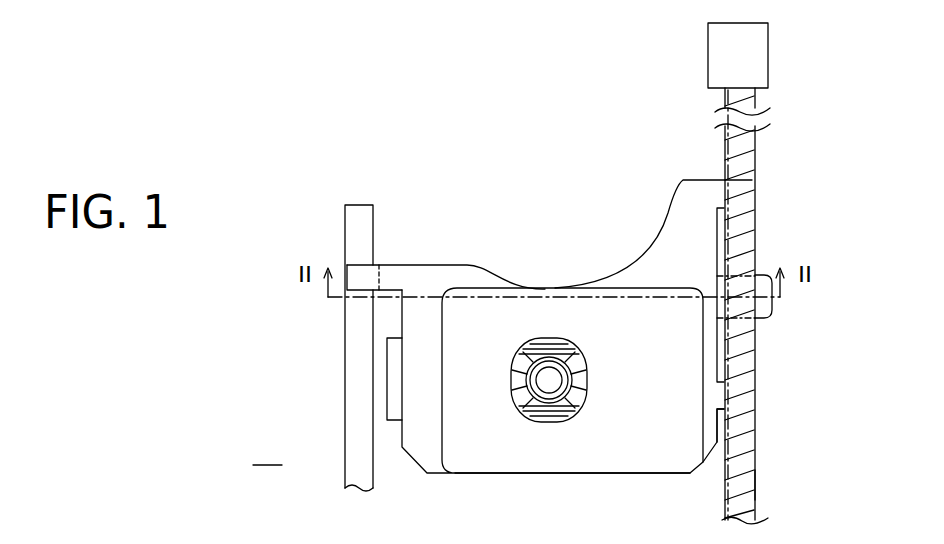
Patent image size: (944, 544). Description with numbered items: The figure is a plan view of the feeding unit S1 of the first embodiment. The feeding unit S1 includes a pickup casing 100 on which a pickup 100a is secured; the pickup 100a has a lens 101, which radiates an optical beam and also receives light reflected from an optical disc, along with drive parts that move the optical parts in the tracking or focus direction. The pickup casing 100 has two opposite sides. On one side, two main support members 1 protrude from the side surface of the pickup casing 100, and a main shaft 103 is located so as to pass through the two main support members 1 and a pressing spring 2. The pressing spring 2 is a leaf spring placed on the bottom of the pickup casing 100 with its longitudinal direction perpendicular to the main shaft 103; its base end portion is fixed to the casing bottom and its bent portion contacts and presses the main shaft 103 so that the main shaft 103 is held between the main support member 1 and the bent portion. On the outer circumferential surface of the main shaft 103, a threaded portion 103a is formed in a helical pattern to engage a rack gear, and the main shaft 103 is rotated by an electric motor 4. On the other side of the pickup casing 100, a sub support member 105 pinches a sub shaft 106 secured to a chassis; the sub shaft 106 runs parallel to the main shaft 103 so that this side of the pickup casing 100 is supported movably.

The main support member 1 is at (743, 200).
The pressing spring 2 is at (766, 310).
The electric motor 4 is at (768, 72).
The pickup casing 100 is at (431, 267).
The pickup 100a is at (495, 461).
The lens 101 is at (547, 378).
The main shaft 103 is at (748, 435).
The threaded portion 103a is at (755, 483).
The sub support member 105 is at (358, 266).
The sub shaft 106 is at (368, 206).
The feeding unit S1 is at (267, 452).